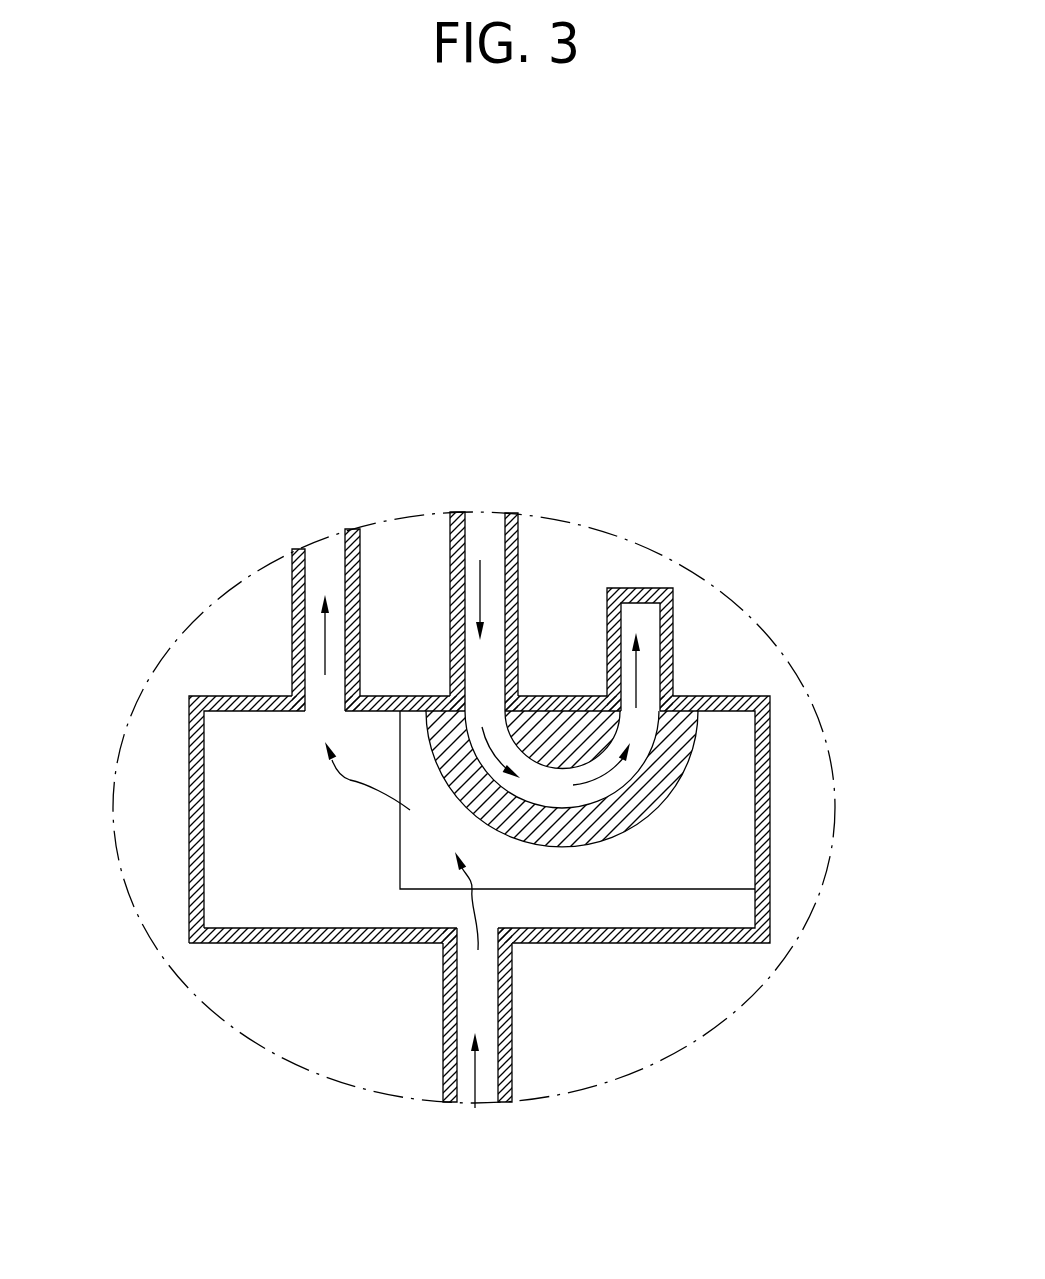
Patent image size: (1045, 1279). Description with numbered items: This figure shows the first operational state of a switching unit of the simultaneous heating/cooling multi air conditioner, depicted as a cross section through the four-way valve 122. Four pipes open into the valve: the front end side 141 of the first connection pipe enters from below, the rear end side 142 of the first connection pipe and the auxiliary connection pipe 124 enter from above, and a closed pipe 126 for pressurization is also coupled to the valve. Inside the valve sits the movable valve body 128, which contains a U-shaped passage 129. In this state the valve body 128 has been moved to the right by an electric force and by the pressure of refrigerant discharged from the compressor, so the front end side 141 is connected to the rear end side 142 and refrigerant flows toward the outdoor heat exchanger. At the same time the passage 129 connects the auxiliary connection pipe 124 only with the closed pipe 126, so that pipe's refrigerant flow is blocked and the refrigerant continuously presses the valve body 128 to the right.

The 4-way valve 122 is at (189, 826).
The auxiliary connection pipe 124 is at (518, 552).
The closed pipe 126 is at (673, 627).
The valve body 128 is at (700, 799).
The passage 129 is at (643, 733).
The front end side of the first connection pipe 141 is at (443, 1028).
The rear end side of the first connection pipe 142 is at (292, 610).